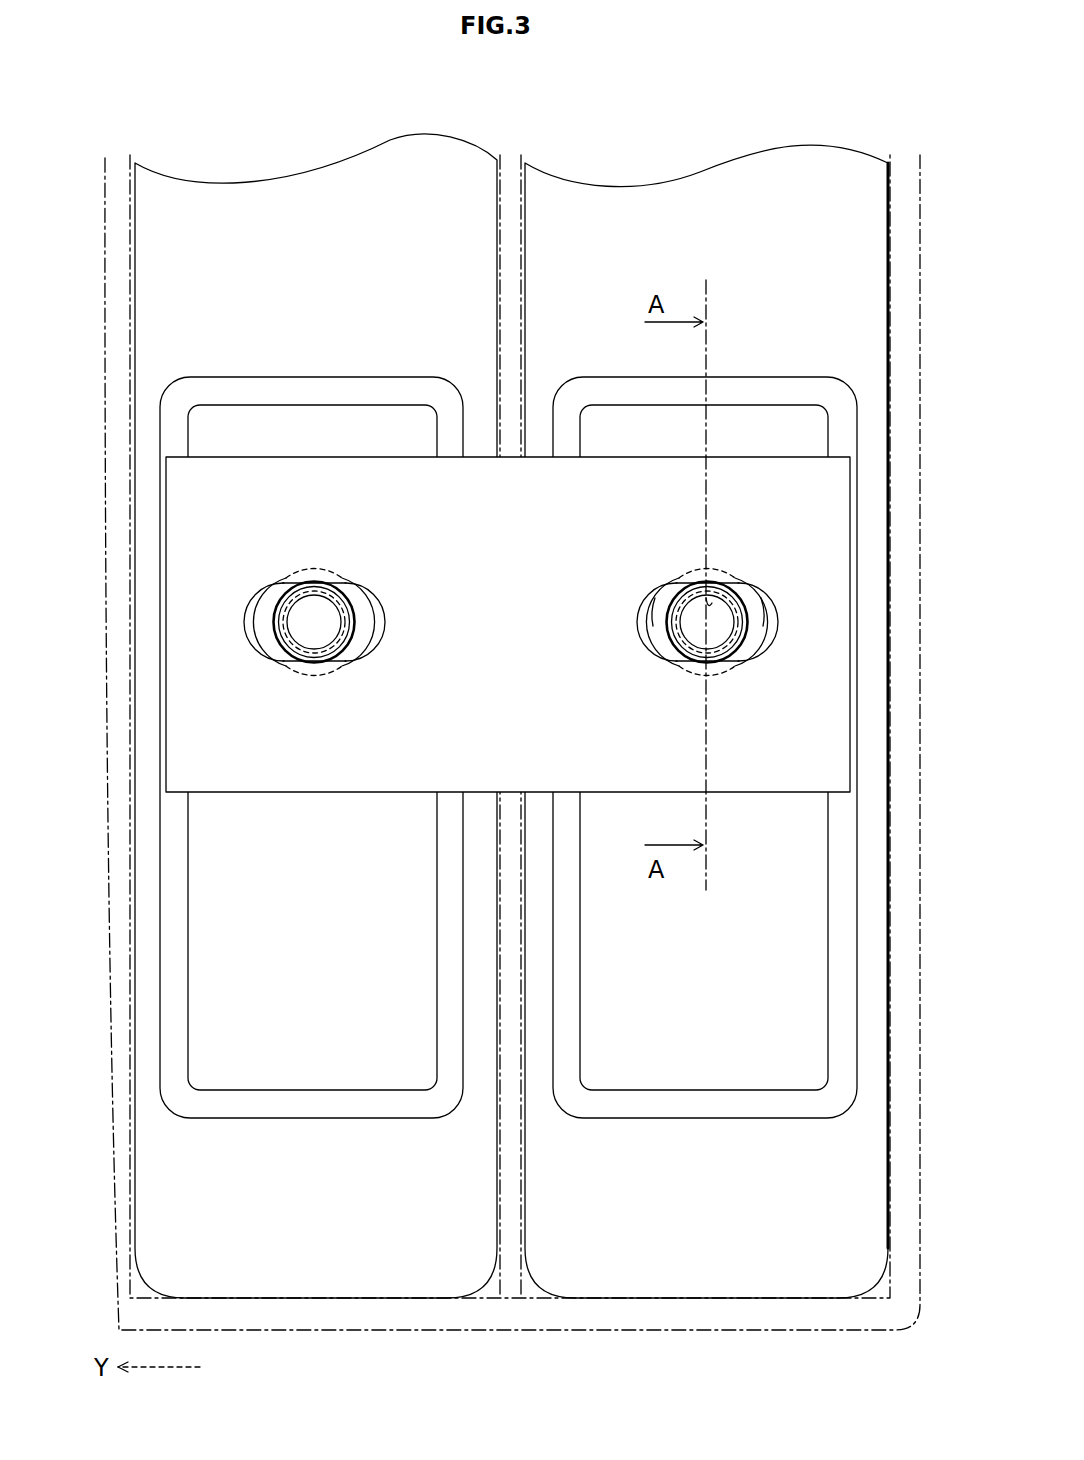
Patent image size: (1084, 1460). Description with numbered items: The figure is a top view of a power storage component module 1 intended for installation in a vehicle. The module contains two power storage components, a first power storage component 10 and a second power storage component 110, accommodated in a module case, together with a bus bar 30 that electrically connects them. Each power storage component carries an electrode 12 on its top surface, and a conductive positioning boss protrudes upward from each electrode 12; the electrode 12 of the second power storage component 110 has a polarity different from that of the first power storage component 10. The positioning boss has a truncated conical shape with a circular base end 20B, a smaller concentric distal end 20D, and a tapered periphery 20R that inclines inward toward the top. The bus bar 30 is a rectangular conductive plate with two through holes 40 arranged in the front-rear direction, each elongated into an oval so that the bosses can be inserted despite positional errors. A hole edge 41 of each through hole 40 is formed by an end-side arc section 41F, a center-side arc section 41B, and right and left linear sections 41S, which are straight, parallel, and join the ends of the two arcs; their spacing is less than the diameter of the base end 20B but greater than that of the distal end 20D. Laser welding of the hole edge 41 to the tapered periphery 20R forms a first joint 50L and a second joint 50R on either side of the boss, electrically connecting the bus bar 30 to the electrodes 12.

The power storage component module 1 is at (232, 103).
The first power storage component 10 is at (330, 1255).
The second power storage component 110 is at (700, 1262).
The electrode 12 is at (226, 896).
The bus bar 30 is at (193, 557).
The through hole 40 is at (217, 543).
The base end 20B is at (272, 613).
The distal end 20D is at (272, 613).
The tapered periphery 20R is at (206, 629).
The first joint 50L is at (273, 662).
The second joint 50R is at (300, 611).
The hole edge 41 is at (738, 364).
The center-side arc section 41B is at (656, 600).
The linear section 41S is at (718, 658).
The end-side arc section 41F is at (761, 603).